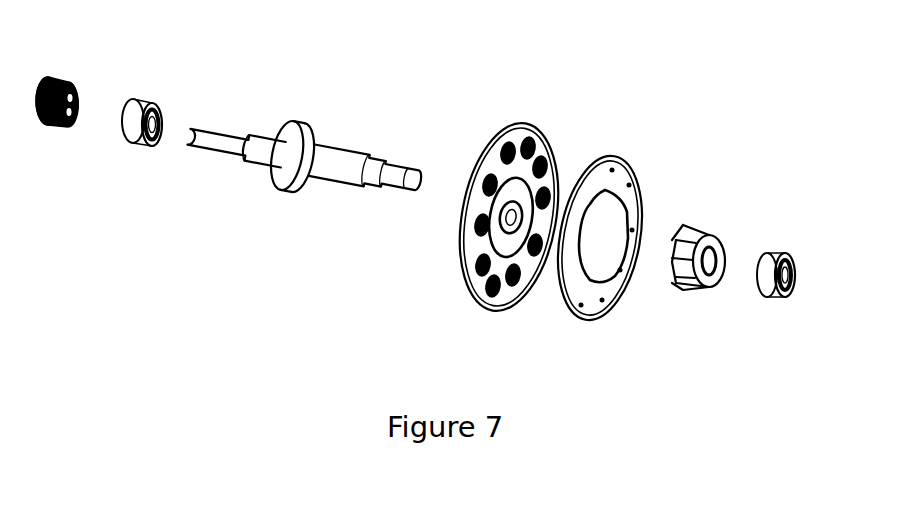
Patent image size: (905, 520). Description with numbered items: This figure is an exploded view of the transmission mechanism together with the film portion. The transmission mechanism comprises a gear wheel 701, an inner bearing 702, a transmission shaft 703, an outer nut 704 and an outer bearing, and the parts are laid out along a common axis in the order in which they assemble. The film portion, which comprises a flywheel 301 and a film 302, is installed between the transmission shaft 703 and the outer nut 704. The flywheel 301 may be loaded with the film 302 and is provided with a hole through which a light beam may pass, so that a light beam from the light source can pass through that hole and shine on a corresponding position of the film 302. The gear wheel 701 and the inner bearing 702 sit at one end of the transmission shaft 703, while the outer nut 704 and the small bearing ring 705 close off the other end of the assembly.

The gear wheel 701 is at (68, 78).
The inner bearing 702 is at (153, 103).
The transmission shaft 703 is at (310, 125).
The flywheel 301 is at (537, 127).
The film 302 is at (634, 163).
The outer nut 704 is at (700, 218).
The bearing ring 705 is at (782, 252).